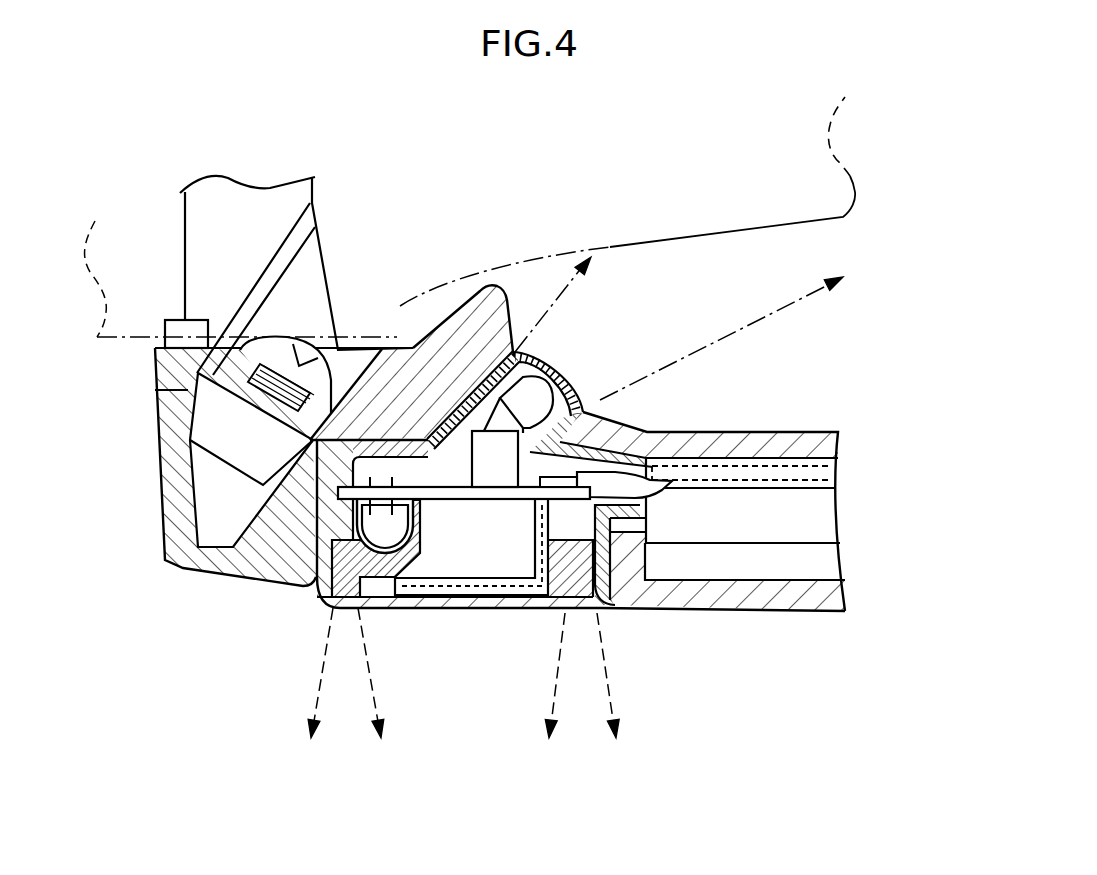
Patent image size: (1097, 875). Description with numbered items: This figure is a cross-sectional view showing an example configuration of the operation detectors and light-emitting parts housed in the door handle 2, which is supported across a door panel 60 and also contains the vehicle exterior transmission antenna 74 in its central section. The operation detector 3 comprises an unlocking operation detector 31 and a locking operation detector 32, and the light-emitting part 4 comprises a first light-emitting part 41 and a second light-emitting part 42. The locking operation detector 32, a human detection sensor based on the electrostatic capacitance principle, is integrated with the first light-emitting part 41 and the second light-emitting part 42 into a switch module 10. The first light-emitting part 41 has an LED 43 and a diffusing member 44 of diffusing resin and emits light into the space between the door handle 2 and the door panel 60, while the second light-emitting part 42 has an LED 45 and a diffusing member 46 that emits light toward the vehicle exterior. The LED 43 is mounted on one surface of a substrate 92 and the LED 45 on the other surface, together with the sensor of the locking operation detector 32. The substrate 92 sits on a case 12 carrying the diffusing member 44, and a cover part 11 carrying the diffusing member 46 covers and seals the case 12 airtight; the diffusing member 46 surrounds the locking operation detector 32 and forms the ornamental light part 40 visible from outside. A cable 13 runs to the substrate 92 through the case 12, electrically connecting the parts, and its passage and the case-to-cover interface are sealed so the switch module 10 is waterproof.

The door handle 2 is at (801, 612).
The operation detector 3 is at (642, 527).
The light-emitting part 4 is at (439, 485).
The switch module 10 is at (603, 603).
The cover part 11 is at (507, 612).
The case 12 is at (460, 395).
The cable 13 is at (655, 496).
The unlocking operation detector 31 is at (778, 468).
The locking operation detector 32 is at (453, 613).
The ornamental light part 40 is at (578, 612).
The first light-emitting part 41 is at (565, 357).
The second light-emitting part 42 is at (298, 602).
The LED 43 is at (548, 380).
The diffusing member 44 is at (590, 408).
The LED 45 is at (363, 520).
The diffusing member 46 is at (347, 593).
The door panel 60 is at (138, 338).
The vehicle exterior transmission antenna 74 is at (813, 528).
The substrate 92 is at (440, 497).